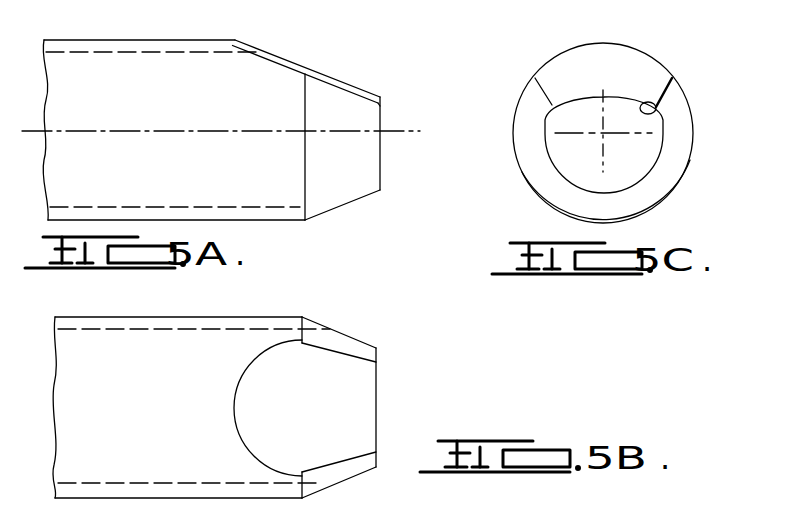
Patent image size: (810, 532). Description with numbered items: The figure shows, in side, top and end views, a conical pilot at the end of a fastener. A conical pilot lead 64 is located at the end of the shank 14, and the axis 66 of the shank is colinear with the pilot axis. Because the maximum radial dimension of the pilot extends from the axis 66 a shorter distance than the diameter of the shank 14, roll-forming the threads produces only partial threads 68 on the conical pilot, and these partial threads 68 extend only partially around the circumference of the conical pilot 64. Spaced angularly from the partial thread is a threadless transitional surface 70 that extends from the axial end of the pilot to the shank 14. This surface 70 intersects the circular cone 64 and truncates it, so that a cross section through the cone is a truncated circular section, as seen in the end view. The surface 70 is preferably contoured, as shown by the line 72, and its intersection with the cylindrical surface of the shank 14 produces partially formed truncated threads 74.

In FIG. 5A, the shank 14 is at (145, 72).
In FIG. 5B, the shank 14 is at (132, 343).
In FIG. 5A, the conical pilot lead 64 is at (355, 110).
In FIG. 5C, the conical pilot lead 64 is at (628, 168).
In FIG. 5B, the conical pilot lead 64 is at (363, 352).
In FIG. 5A, the axis 66 is at (410, 134).
In FIG. 5C, the axis 66 is at (603, 134).
In FIG. 5A, the partial threads 68 is at (341, 205).
In FIG. 5A, the threadless transitional surface 70 is at (338, 80).
In FIG. 5C, the threadless transitional surface 70 is at (620, 58).
In FIG. 5B, the threadless transitional surface 70 is at (360, 402).
In FIG. 5C, the contour line 72 is at (658, 108).
In FIG. 5A, the partially formed truncated threads 74 is at (244, 43).
In FIG. 5C, the partially formed truncated threads 74 is at (603, 92).